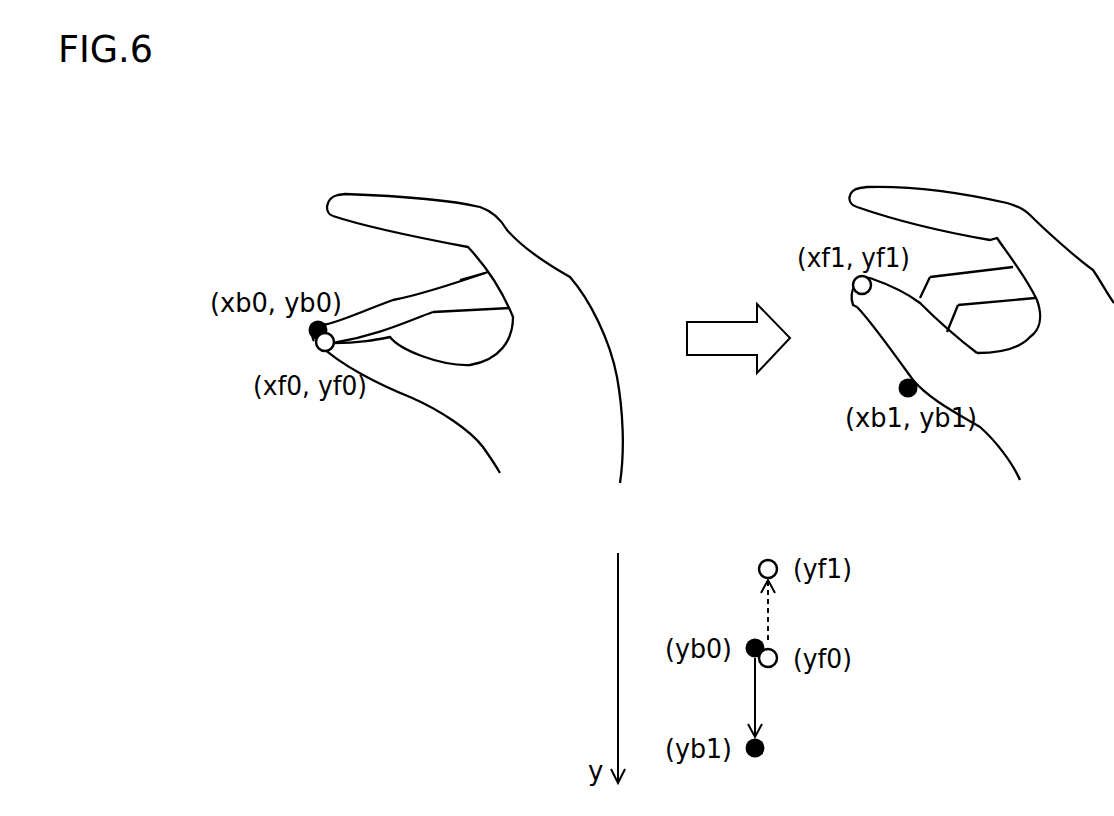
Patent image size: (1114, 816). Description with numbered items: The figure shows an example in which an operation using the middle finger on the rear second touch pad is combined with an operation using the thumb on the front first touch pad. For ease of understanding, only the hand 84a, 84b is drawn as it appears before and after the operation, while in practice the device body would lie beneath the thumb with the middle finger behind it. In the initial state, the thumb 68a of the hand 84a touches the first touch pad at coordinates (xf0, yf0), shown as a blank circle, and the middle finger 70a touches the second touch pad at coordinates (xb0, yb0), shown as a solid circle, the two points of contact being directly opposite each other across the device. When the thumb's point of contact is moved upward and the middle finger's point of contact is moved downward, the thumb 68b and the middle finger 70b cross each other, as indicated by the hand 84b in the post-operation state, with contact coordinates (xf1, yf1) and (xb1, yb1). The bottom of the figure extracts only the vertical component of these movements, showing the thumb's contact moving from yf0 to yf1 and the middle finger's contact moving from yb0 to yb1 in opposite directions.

The hand 84a is at (413, 210).
The hand 84b is at (938, 205).
The thumb 68a is at (397, 375).
The thumb 68b is at (897, 328).
The middle finger 70a is at (373, 307).
The middle finger 70b is at (902, 350).